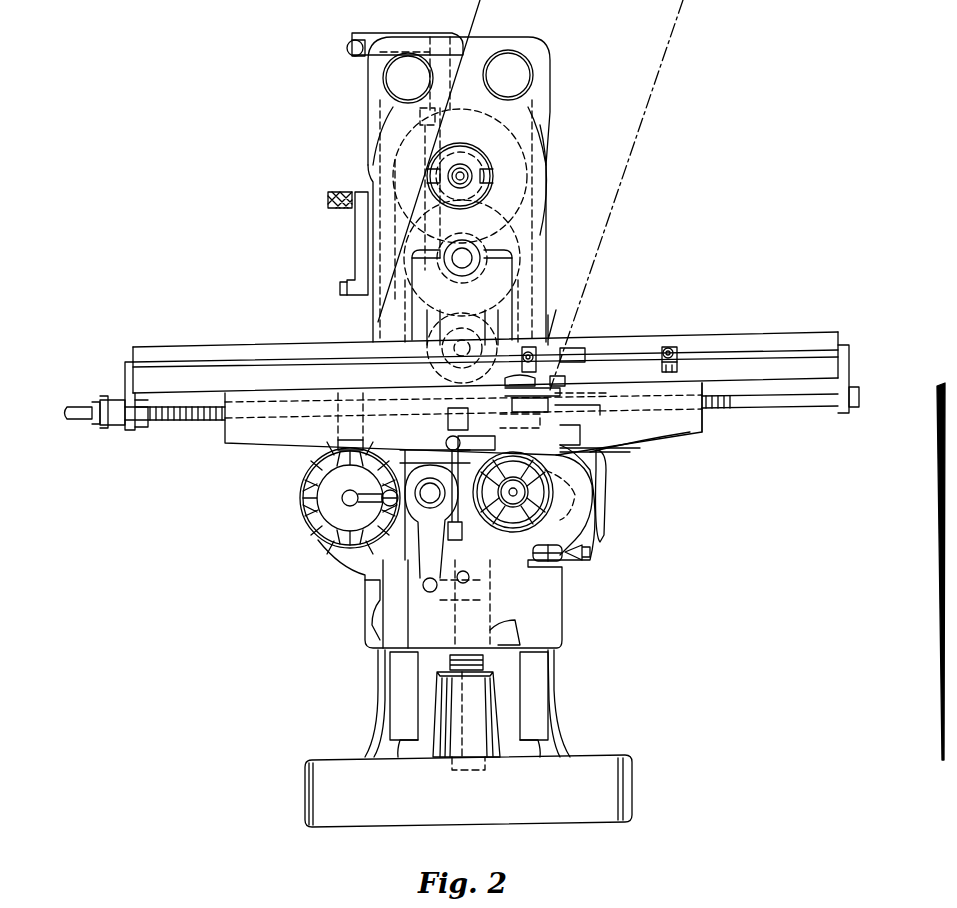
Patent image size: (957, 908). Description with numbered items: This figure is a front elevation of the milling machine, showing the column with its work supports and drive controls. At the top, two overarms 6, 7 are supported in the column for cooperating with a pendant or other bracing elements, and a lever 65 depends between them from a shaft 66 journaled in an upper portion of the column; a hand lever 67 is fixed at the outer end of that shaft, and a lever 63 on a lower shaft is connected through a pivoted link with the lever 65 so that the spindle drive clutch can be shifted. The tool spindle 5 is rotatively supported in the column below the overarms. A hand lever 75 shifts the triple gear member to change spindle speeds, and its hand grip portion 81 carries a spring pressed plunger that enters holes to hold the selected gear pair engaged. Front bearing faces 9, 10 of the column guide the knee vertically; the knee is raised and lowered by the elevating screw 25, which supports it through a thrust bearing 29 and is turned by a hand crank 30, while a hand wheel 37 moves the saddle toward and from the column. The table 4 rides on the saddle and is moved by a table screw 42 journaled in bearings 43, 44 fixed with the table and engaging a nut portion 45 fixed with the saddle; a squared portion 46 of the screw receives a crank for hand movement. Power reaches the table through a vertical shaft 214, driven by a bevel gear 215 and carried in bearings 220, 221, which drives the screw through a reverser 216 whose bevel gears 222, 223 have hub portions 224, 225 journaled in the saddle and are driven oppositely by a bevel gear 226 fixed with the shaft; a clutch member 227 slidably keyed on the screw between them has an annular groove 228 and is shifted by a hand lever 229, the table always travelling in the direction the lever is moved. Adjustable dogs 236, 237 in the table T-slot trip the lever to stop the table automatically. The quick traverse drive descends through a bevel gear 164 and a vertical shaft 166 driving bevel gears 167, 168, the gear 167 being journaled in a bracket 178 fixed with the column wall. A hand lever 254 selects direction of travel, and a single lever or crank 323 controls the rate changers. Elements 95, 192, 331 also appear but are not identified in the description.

The table 4 is at (770, 334).
The tool spindle 5 is at (472, 167).
The overarm 6 is at (408, 78).
The overarm 7 is at (508, 75).
The front bearing face 9 is at (548, 662).
The front bearing face 10 is at (395, 680).
The elevating screw 25 is at (445, 663).
The thrust bearing 29 is at (463, 488).
The hand crank 30 is at (366, 576).
The hand wheel 37 is at (574, 543).
The table screw 42 is at (732, 410).
The bearing 43 is at (130, 430).
The bearing 44 is at (852, 408).
The nut portion 45 is at (335, 423).
The squared portion 46 is at (75, 422).
The lever 63 is at (425, 140).
The lever 65 is at (463, 62).
The shaft 66 is at (420, 34).
The hand lever 67 is at (347, 48).
The hand lever 75 is at (352, 236).
The hand grip portion 81 is at (340, 190).
The feed mechanism 95 is at (437, 544).
The bevel gear 164 is at (530, 405).
The shaft 166 is at (530, 552).
The bevel gear 167 is at (492, 526).
The bevel gear 168 is at (500, 600).
The bracket 178 is at (520, 420).
The shaft 192 is at (476, 442).
The vertical shaft 214 is at (556, 470).
The bevel gear 215 is at (600, 493).
The reverser 216 is at (660, 410).
The bearing 220 is at (615, 452).
The bearing 221 is at (570, 478).
The bevel gear 222 is at (515, 378).
The bevel gear 223 is at (596, 389).
The hub portion 224 is at (526, 393).
The hub portion 225 is at (595, 412).
The bevel gear 226 is at (583, 435).
The clutch member 227 is at (568, 378).
The annular groove 228 is at (582, 358).
The hand lever 229 is at (566, 348).
The adjustable dog 236 is at (668, 346).
The adjustable dog 237 is at (558, 330).
The hand lever 254 is at (608, 517).
The lever or crank 323 is at (370, 505).
The hand wheel 331 is at (300, 496).